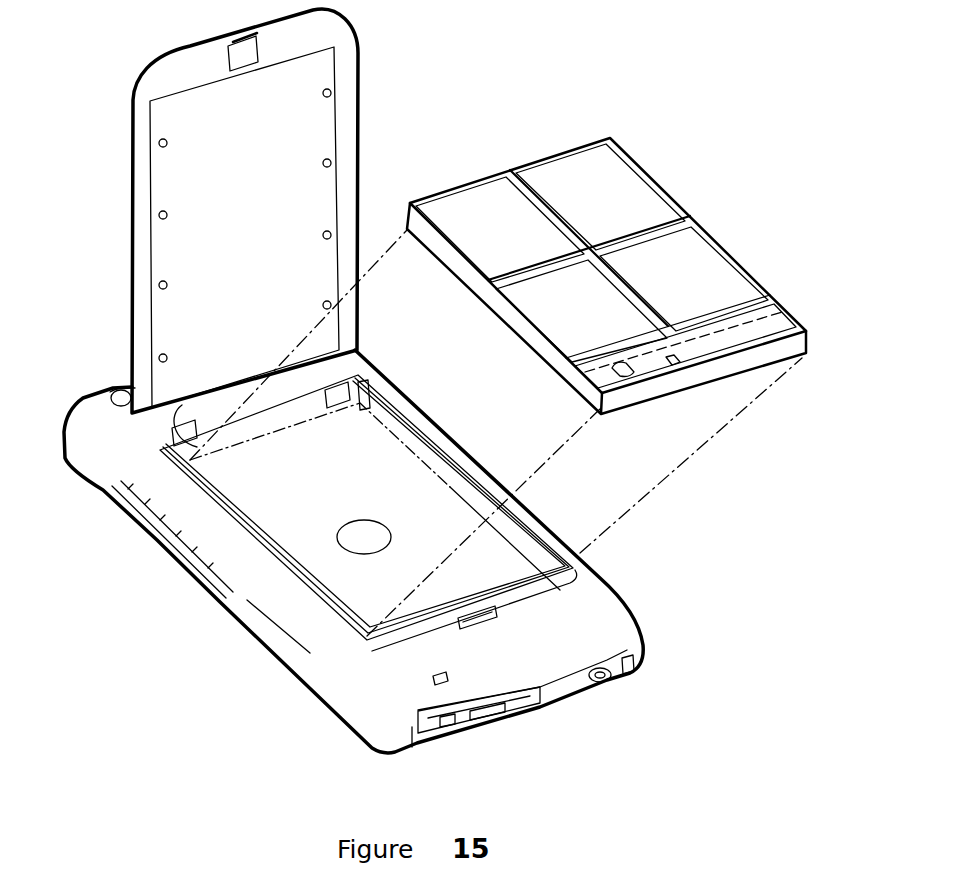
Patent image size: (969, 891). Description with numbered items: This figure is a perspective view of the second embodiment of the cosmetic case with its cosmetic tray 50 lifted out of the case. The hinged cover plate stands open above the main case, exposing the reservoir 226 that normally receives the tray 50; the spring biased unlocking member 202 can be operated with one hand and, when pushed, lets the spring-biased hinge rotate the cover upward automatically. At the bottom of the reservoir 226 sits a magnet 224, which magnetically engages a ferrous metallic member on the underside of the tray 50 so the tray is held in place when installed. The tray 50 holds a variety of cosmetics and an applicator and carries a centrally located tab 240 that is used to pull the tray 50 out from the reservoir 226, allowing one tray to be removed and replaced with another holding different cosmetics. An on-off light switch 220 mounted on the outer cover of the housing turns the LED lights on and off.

The cosmetic tray 50 is at (822, 310).
The spring biased unlocking member 202 is at (140, 240).
The on-off light switch 220 is at (432, 681).
The magnet 224 is at (364, 530).
The reservoir 226 is at (410, 517).
The tab 240 is at (592, 247).